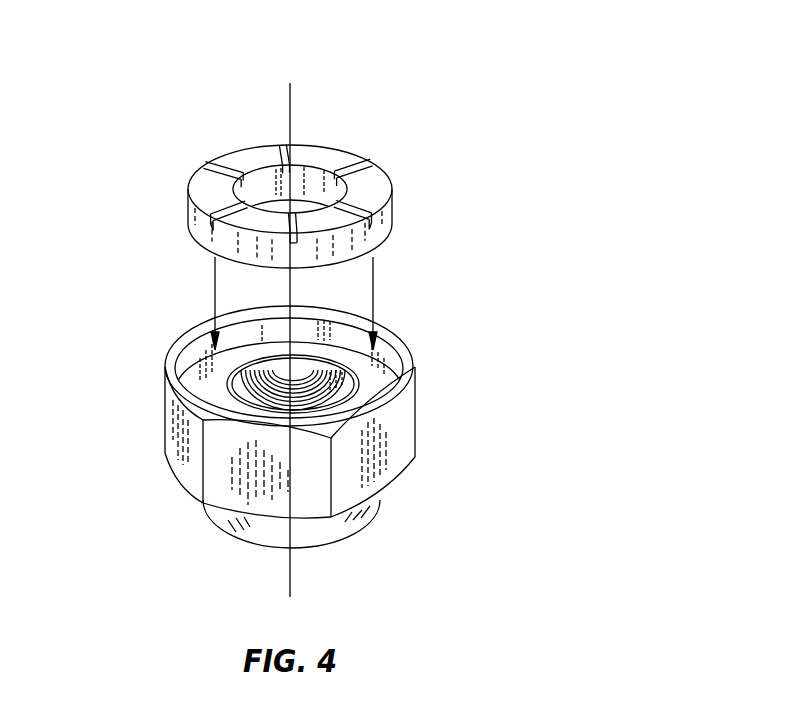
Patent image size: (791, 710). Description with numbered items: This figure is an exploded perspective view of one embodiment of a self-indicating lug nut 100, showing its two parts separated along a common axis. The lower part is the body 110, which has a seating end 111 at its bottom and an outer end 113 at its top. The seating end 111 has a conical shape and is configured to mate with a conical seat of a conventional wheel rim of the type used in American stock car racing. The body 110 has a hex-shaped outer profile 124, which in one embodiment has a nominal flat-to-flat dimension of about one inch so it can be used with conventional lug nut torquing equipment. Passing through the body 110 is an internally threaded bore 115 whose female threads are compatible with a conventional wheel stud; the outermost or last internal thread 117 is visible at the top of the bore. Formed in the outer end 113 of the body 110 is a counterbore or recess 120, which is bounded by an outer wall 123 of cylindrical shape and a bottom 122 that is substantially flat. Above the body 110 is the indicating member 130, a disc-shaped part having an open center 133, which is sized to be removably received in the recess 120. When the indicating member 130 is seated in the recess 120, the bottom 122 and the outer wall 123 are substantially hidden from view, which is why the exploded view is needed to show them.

The self-indicating lug nut 100 is at (580, 117).
The body 110 is at (415, 434).
The seating end 111 is at (342, 520).
The outer end 113 is at (193, 340).
The internally threaded bore 115 is at (343, 378).
The last internal thread 117 is at (240, 387).
The recess 120 is at (313, 330).
The bottom 122 is at (257, 350).
The outer wall 123 is at (357, 337).
The hex-shaped outer profile 124 is at (217, 485).
The indicating member 130 is at (325, 148).
The open center 133 is at (273, 198).